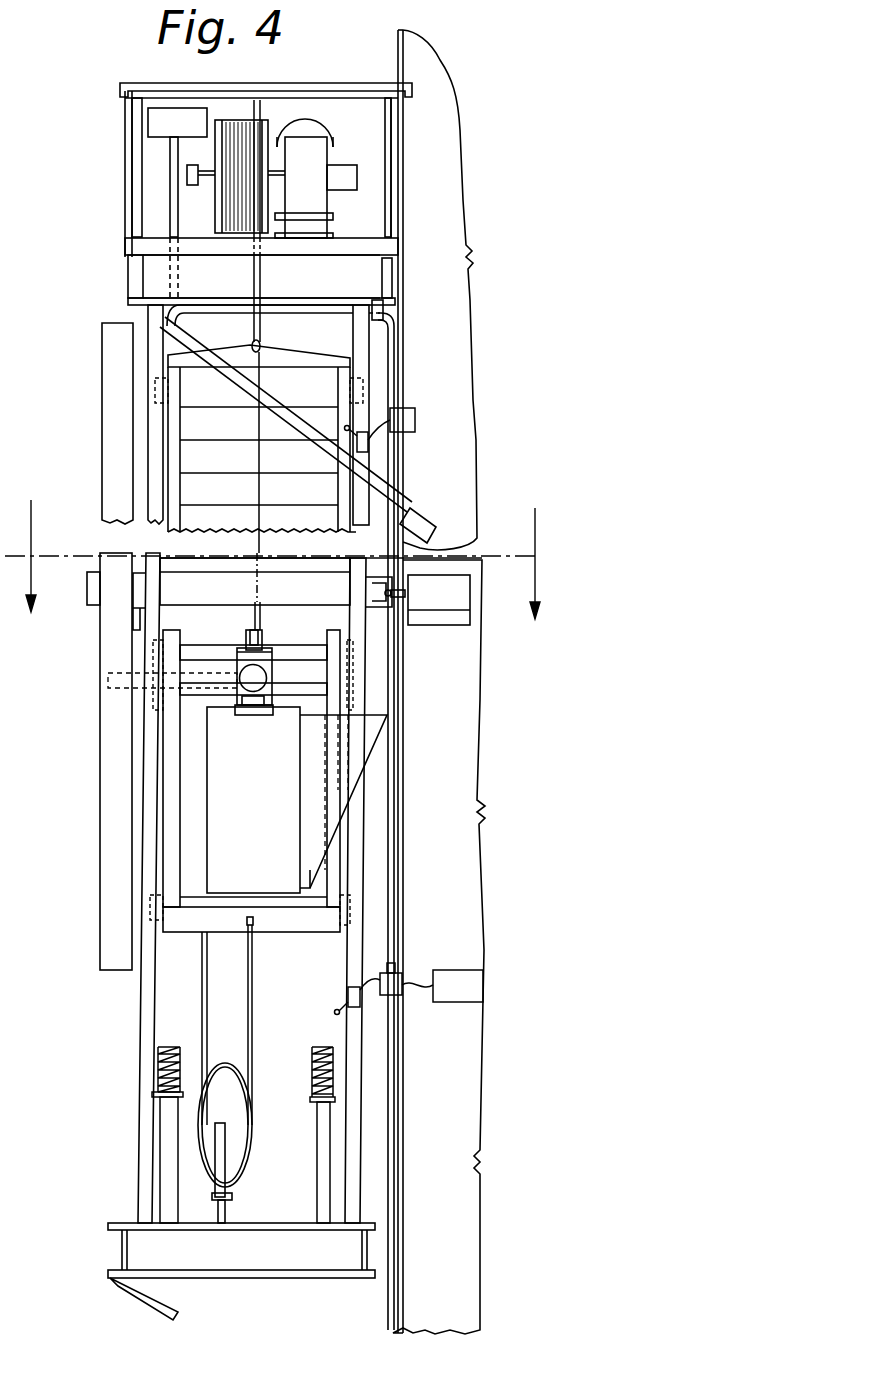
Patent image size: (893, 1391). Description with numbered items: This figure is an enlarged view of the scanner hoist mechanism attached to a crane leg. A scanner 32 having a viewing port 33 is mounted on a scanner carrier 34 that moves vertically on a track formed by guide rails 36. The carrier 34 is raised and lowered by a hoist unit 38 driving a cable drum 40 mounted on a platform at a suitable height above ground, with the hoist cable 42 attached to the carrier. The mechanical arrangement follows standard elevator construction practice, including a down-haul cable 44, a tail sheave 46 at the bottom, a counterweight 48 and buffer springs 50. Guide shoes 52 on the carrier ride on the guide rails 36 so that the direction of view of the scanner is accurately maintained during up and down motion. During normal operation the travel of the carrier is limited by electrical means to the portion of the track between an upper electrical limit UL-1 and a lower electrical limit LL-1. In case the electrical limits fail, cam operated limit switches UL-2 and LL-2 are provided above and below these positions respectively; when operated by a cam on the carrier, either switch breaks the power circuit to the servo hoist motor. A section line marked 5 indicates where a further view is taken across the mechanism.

The cable drum 40 is at (238, 120).
The motor 38 is at (305, 140).
The hoist cable 42 is at (263, 288).
The car 48 is at (188, 420).
The guide shoes 52 is at (355, 378).
The upper limit switch UL-2 is at (368, 448).
The upper limit position UL-1 is at (452, 533).
The section line 5- 5 is at (274, 545).
The header beam 36 is at (353, 583).
The sheave block 34 is at (290, 685).
The counterweight 32 is at (268, 852).
The bracket plate 33 is at (367, 765).
The lower limit position LL-1 is at (424, 805).
The tension cable 44 is at (255, 982).
The buffer springs 50 is at (170, 1047).
The tension pulley 46 is at (235, 1145).
The lower limit switch LL-2 is at (360, 1005).